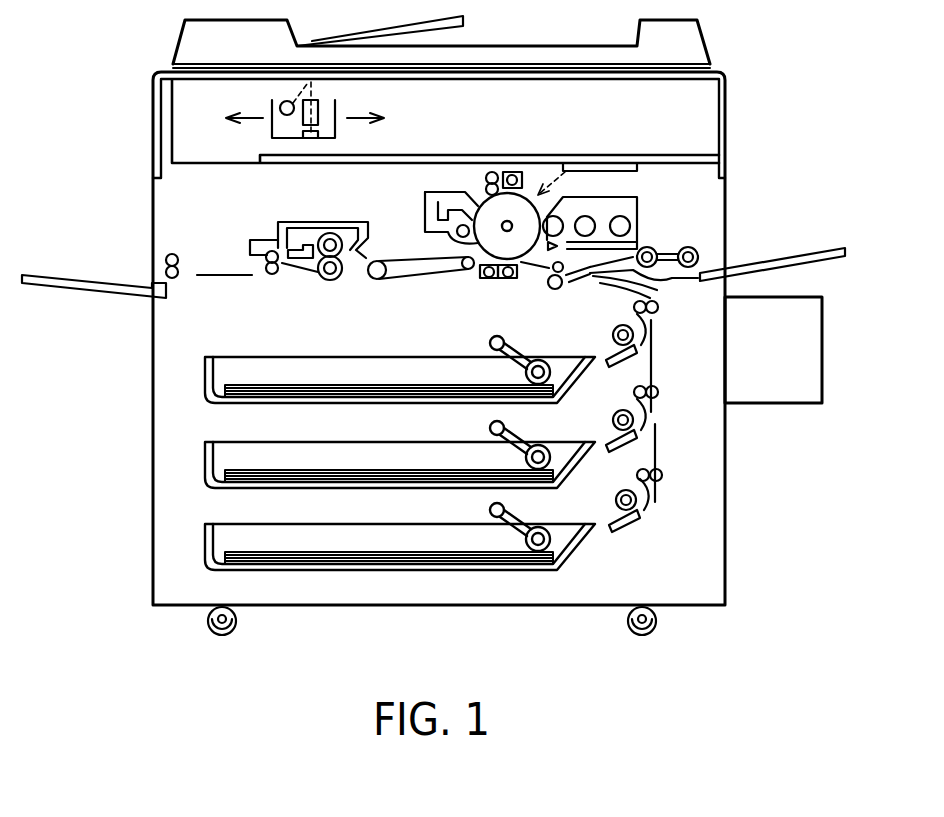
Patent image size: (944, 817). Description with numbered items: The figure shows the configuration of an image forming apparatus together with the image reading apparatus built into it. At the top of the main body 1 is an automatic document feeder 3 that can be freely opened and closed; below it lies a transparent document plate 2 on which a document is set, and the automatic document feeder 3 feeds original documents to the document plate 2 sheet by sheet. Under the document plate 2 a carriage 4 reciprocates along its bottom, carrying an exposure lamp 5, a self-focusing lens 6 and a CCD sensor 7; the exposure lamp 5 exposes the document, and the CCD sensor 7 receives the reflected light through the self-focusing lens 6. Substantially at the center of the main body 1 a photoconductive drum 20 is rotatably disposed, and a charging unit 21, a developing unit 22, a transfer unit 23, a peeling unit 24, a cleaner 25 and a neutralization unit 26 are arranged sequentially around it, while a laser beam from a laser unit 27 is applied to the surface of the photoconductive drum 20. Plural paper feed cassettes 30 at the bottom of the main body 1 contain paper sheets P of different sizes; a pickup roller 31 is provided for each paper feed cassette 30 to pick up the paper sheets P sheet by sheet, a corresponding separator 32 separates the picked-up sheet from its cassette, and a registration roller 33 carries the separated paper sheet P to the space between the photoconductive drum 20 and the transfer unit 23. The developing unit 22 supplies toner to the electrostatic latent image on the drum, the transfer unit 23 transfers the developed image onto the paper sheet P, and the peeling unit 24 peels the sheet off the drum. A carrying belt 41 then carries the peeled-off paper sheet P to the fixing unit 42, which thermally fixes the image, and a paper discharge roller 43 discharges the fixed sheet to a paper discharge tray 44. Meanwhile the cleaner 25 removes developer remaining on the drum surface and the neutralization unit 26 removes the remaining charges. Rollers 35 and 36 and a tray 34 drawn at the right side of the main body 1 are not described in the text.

The main body 1 is at (727, 128).
The document plate 2 is at (407, 80).
The automatic document feeder (ADF) 3 is at (543, 44).
The carriage 4 is at (272, 132).
The exposure lamp 5 is at (283, 102).
The self-focusing lens 6 is at (319, 112).
The CCD sensor 7 is at (327, 135).
The photoconductive drum 20 is at (478, 194).
The charging unit 21 is at (527, 170).
The developing unit 22 is at (617, 196).
The transfer unit 23 is at (508, 281).
The peeling unit 24 is at (487, 281).
The cleaner 25 is at (424, 207).
The neutralization unit 26 is at (487, 171).
The laser unit 27 is at (637, 169).
The paper feed cassette 30 is at (205, 375).
The pickup roller 31 is at (565, 356).
The separator 32 is at (618, 327).
The registration roller 33 is at (555, 291).
The discharge tray 34 is at (806, 256).
The discharge roller 35 is at (692, 247).
The discharge roller 36 is at (651, 247).
The carrying belt 41 is at (399, 258).
The fixing unit 42 is at (316, 222).
The paper discharge roller 43 is at (172, 253).
The paper discharge tray 44 is at (94, 294).
The paper sheet P is at (332, 385).